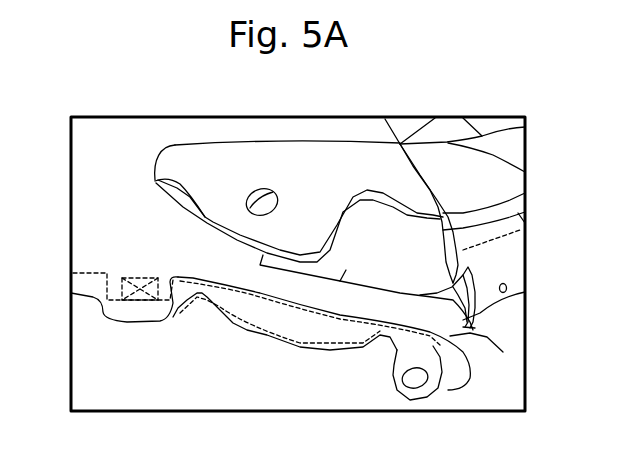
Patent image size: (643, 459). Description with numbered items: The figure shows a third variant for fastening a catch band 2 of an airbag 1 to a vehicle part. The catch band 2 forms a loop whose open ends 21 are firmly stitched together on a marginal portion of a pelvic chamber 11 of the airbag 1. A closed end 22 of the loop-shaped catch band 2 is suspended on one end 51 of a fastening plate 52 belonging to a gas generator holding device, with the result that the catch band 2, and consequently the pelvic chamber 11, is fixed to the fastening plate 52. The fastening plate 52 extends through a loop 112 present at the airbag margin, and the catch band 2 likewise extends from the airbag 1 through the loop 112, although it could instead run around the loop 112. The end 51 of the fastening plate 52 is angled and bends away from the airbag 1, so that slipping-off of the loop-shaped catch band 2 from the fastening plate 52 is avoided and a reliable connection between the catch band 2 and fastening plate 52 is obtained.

The airbag 1 is at (369, 113).
The pelvic chamber 11 is at (108, 150).
The loop 112 is at (325, 162).
The catch band 2 is at (363, 305).
The open ends 21 is at (142, 290).
The closed end 22 is at (503, 352).
The angled end 51 is at (427, 387).
The fastening plate 52 is at (458, 295).